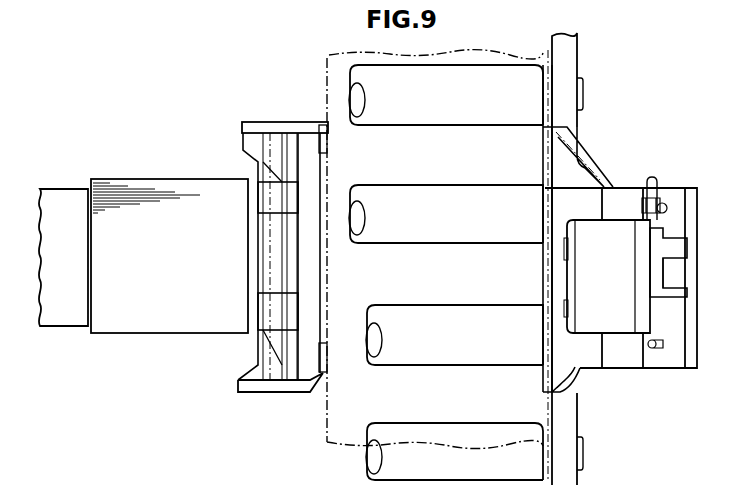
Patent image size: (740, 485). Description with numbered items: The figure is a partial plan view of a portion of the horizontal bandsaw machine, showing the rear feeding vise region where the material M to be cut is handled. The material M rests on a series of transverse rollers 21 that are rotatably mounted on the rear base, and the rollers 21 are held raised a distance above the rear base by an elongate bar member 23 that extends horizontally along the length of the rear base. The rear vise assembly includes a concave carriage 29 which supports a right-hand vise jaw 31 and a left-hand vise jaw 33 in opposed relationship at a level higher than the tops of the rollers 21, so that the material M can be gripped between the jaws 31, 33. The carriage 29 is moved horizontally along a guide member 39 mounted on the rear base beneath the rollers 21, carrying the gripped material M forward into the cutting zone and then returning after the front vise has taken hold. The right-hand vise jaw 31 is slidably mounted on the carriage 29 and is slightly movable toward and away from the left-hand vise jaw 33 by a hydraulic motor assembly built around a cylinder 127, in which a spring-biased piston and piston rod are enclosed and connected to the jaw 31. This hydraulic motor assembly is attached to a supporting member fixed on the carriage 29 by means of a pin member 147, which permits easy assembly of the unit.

The transverse rollers 21 is at (457, 117).
The elongate bar member 23 is at (568, 53).
The carriage 29 is at (188, 281).
The right-hand vise jaw 31 is at (563, 193).
The left-hand vise jaw 33 is at (308, 122).
The guide member 39 is at (73, 186).
The cylinder 127 is at (624, 274).
The pin member 147 is at (668, 295).
The material M is at (323, 73).